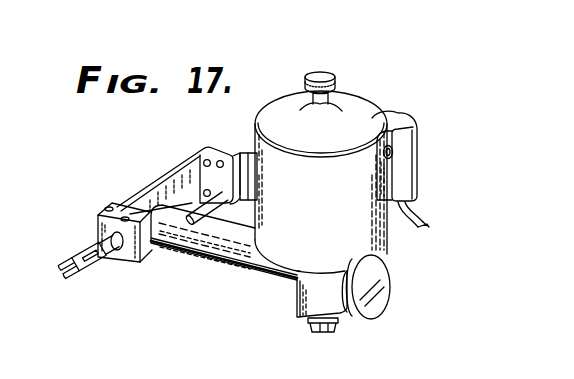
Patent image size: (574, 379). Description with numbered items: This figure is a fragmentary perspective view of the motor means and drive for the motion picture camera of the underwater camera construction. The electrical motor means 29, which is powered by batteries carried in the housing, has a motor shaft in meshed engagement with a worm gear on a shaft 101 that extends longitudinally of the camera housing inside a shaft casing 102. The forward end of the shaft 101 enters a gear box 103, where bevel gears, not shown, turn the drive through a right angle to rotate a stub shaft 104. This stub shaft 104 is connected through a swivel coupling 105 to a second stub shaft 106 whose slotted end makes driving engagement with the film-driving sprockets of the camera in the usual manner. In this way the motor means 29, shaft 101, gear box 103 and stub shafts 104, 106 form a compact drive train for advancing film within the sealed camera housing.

The electrical motor means 29 is at (357, 104).
The shaft 101 is at (253, 256).
The shaft casing 102 is at (198, 256).
The gear box 103 is at (100, 227).
The stub shaft 104 is at (110, 237).
The swivel coupling 105 is at (99, 260).
The stub shaft 106 is at (68, 279).